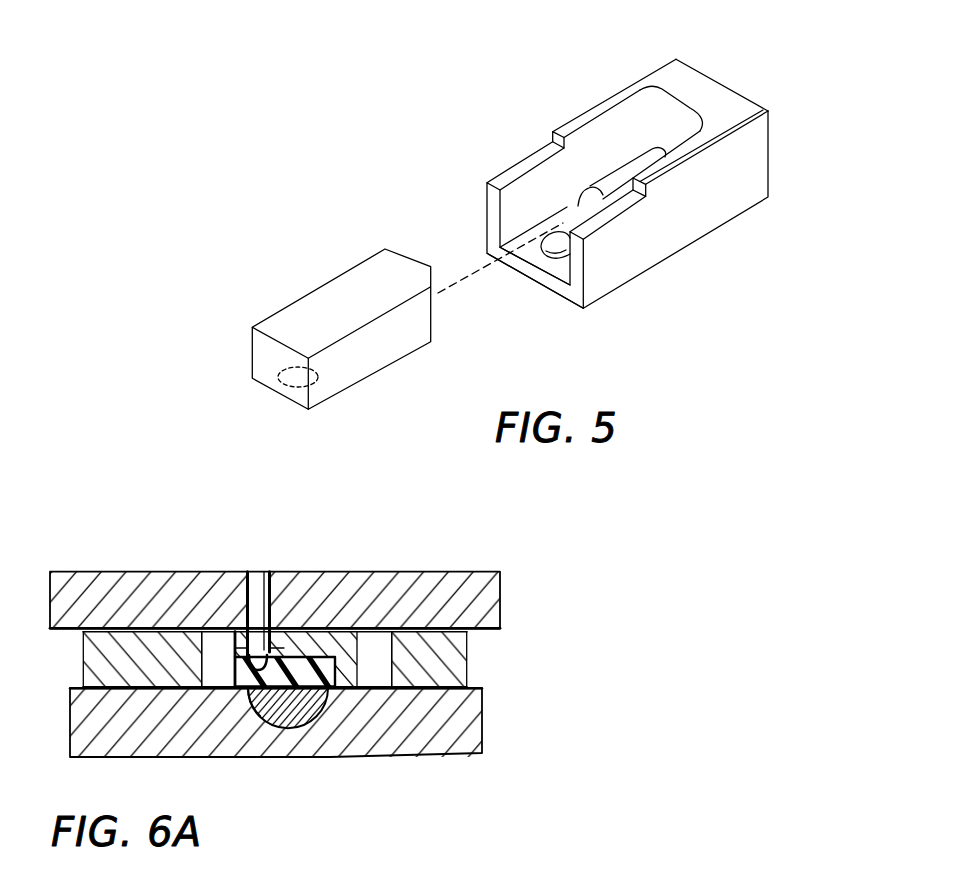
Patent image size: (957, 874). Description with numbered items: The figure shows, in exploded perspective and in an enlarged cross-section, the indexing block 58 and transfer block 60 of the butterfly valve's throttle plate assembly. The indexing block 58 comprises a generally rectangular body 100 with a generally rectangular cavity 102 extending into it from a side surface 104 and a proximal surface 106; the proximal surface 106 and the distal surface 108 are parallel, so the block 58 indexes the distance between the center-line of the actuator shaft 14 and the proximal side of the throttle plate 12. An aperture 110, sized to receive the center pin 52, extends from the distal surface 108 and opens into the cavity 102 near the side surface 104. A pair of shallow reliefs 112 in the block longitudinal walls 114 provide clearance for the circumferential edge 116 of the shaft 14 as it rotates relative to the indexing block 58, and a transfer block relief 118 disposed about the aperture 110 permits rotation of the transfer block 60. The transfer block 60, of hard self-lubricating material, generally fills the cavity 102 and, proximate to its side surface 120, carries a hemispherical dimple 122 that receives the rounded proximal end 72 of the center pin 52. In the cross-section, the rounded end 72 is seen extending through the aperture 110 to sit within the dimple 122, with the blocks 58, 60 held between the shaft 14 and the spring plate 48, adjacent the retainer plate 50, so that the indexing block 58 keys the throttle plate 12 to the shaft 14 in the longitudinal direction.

In FIG. 6A, the throttle plate 12 is at (462, 586).
In FIG. 6A, the actuator shaft 14 is at (312, 712).
In FIG. 6A, the spring plate 48 is at (458, 662).
In FIG. 6A, the retainer plate 50 is at (467, 730).
In FIG. 6A, the center pin 52 is at (273, 578).
In FIG. 5, the indexing block 58 is at (700, 287).
In FIG. 6A, the indexing block 58 is at (377, 624).
In FIG. 5, the transfer block 60 is at (325, 270).
In FIG. 6A, the transfer block 60 is at (321, 674).
In FIG. 6A, the proximal end of the center pin 72 is at (278, 724).
In FIG. 5, the body 100 is at (766, 169).
In FIG. 5, the rectangular cavity 102 is at (530, 195).
In FIG. 5, the side surface 104 is at (558, 288).
In FIG. 5, the proximal surface 106 is at (701, 86).
In FIG. 5, the distal surface 108 is at (643, 275).
In FIG. 5, the aperture 110 is at (545, 254).
In FIG. 5, the reliefs 112 is at (547, 153).
In FIG. 5, the block longitudinal walls 114 is at (621, 92).
In FIG. 6A, the circumferential edge 116 is at (252, 703).
In FIG. 5, the transfer block relief 118 is at (573, 205).
In FIG. 6A, the transfer block relief 118 is at (288, 628).
In FIG. 5, the side surface 120 is at (263, 374).
In FIG. 5, the hemispherical dimple 122 is at (292, 389).
In FIG. 6A, the hemispherical dimple 122 is at (222, 666).